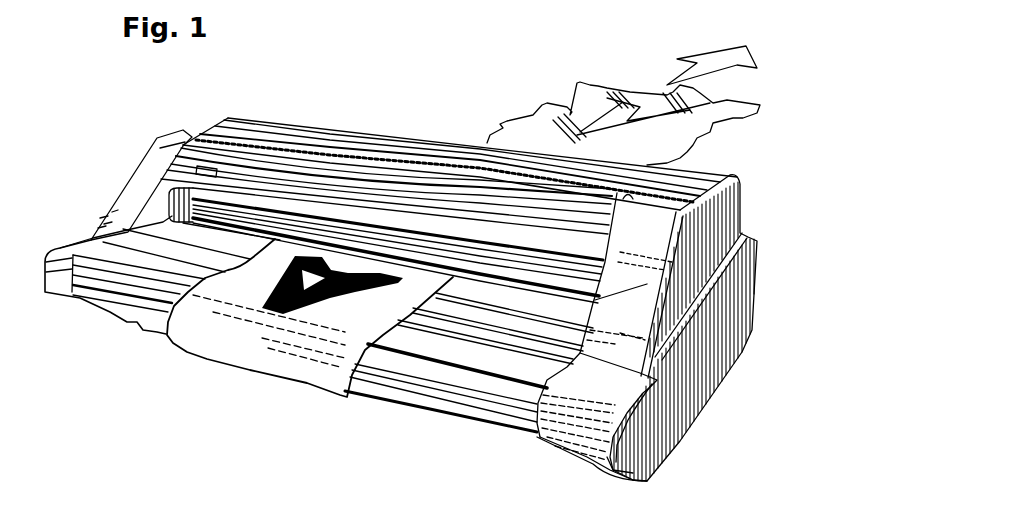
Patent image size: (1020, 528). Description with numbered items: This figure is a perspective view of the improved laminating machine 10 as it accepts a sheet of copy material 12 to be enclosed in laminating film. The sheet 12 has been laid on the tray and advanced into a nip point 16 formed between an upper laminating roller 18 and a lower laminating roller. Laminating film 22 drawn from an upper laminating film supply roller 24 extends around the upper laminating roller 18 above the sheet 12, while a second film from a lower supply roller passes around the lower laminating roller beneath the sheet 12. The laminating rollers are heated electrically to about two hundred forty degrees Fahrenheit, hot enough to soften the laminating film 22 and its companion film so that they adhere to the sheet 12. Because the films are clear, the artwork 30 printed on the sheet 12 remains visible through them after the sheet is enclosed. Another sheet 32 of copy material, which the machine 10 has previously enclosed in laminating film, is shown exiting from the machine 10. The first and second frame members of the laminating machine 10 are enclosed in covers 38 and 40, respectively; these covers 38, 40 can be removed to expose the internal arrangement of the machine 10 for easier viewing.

The laminating machine 10 is at (767, 197).
The sheet of copy material 12 is at (330, 360).
The nip point 16 is at (590, 293).
The upper laminating roller 18 is at (640, 252).
The laminating film 22 is at (69, 174).
The upper laminating film supply roller 24 is at (253, 138).
The artwork 30 is at (262, 300).
The sheet 32 is at (735, 118).
The cover 38 is at (710, 379).
The cover 40 is at (182, 146).